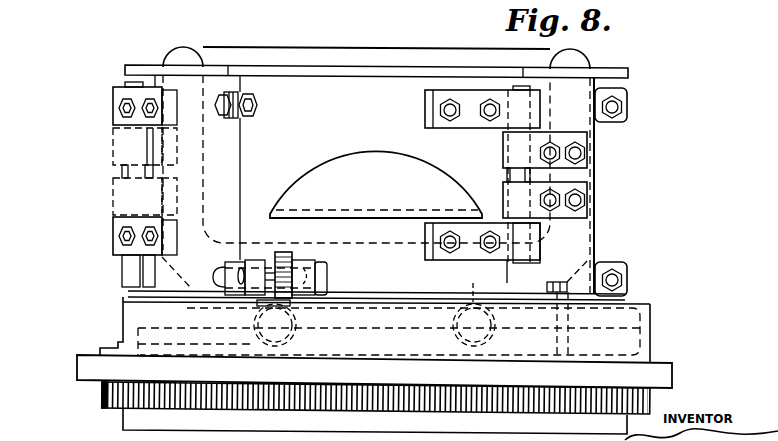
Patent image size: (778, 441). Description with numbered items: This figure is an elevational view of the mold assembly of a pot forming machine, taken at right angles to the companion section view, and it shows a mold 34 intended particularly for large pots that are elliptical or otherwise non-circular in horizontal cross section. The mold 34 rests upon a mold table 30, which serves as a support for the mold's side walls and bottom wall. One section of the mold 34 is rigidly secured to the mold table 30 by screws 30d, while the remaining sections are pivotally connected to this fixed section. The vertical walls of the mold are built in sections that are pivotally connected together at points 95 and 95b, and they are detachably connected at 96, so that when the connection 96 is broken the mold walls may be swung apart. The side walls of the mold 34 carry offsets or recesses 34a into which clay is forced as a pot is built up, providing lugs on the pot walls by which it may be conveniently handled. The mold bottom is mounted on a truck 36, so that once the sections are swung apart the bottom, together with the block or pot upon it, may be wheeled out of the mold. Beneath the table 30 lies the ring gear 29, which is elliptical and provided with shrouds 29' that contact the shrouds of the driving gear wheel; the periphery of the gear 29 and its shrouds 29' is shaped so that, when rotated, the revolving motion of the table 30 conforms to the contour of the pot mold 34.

The mold 34 is at (312, 93).
The offsets or recesses 34a is at (620, 77).
The pivotal connection point 95 is at (122, 86).
The detachable connection 96 is at (232, 122).
The pivotal connection point 95b is at (510, 141).
The truck 36 is at (322, 295).
The screws 30d is at (557, 282).
The mold table 30 is at (660, 363).
The ring gear 29 is at (349, 398).
The shrouds 29' is at (350, 424).